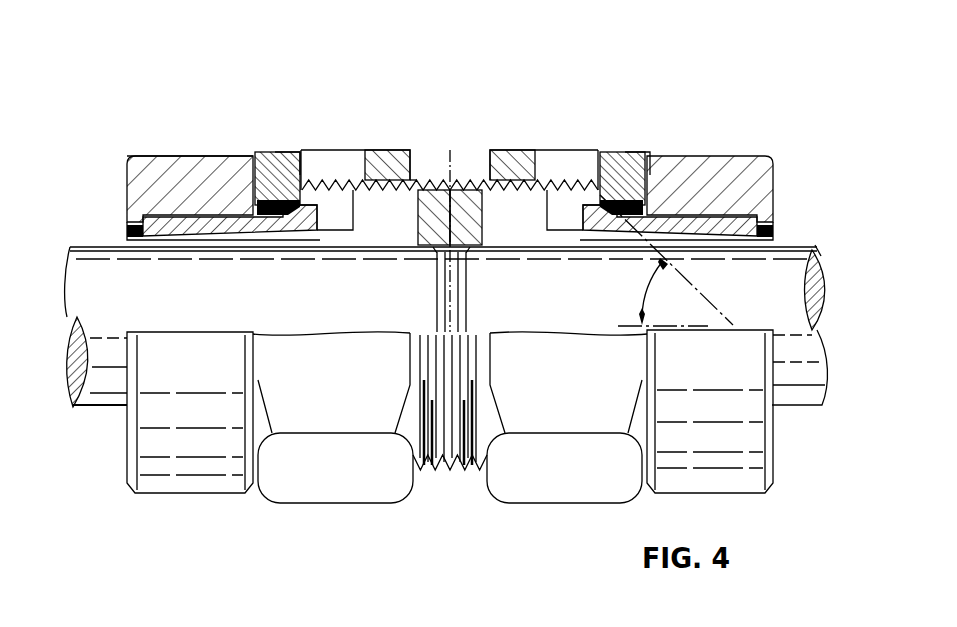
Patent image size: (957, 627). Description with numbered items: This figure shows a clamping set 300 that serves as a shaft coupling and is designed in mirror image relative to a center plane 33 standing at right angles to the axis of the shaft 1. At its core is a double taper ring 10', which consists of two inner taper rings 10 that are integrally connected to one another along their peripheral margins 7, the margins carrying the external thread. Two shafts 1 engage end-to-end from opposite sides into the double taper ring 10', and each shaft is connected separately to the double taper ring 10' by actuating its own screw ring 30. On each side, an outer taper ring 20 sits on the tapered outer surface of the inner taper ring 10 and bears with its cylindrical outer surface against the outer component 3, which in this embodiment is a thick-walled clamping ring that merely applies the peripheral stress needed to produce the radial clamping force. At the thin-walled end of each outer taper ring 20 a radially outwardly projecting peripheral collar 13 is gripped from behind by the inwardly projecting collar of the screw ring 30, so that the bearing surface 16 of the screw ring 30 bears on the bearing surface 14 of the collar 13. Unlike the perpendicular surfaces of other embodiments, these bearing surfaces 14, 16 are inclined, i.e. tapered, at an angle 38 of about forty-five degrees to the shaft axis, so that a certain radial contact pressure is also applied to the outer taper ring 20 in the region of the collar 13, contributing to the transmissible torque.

The shaft 1 is at (103, 407).
The outer component 3 is at (160, 156).
The peripheral margin 7 is at (420, 210).
The inner taper ring 10 is at (450, 326).
The double taper ring 10' is at (432, 126).
The peripheral collar 13 is at (300, 233).
The bearing surface 14 is at (262, 152).
The bearing surface 16 is at (283, 152).
The outer taper ring 20 is at (170, 220).
The screw ring 30 is at (373, 147).
The center plane 33 is at (454, 156).
The angle 38 is at (646, 293).
The clamping set 300 is at (198, 130).